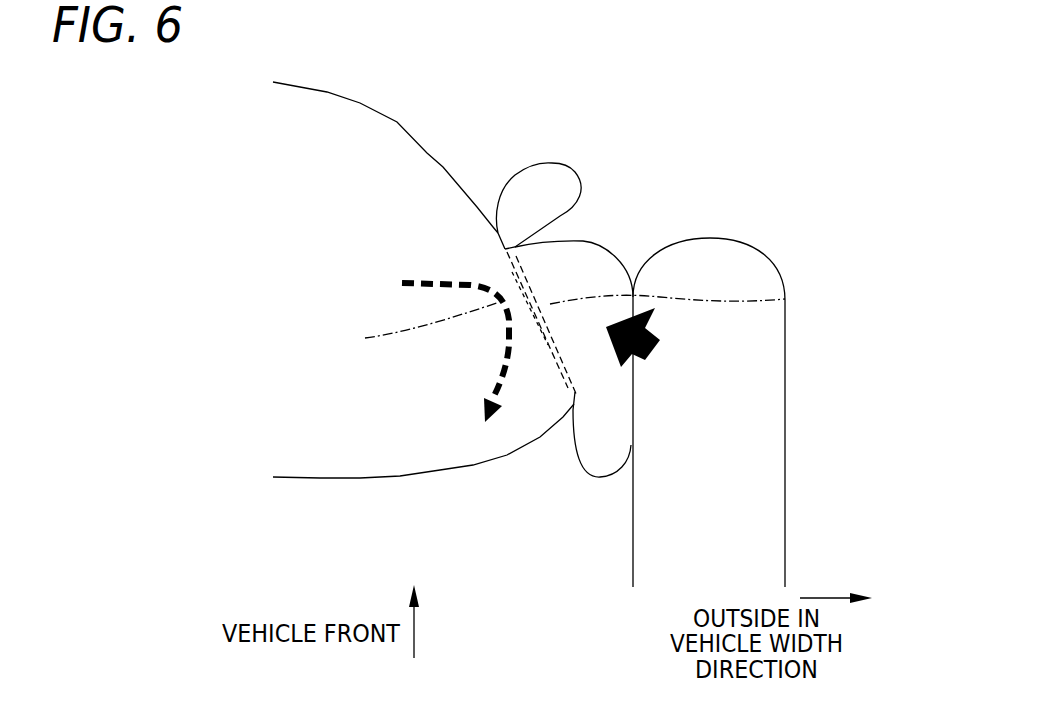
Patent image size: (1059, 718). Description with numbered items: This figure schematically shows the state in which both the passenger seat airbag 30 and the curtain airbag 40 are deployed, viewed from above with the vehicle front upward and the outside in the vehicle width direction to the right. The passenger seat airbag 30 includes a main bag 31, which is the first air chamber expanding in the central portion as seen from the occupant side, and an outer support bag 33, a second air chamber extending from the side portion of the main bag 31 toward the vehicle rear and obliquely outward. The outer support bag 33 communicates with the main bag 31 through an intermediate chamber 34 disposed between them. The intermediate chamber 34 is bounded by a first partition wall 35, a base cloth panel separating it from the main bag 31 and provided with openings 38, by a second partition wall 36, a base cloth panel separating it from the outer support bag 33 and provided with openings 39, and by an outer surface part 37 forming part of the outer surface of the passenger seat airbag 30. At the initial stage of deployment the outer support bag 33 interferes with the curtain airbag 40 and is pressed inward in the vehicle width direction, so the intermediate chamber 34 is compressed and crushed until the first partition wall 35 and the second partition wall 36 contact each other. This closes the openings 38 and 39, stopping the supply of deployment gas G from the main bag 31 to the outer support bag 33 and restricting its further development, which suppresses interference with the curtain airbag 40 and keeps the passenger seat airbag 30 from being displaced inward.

The passenger seat airbag 30 is at (324, 62).
The main bag 31 is at (395, 122).
The outer support bag 33 is at (593, 240).
The intermediate chamber 34 is at (538, 184).
The first partition wall 35 is at (503, 253).
The second partition wall 36 is at (573, 375).
The outer surface part 37 is at (560, 163).
The openings 38 is at (417, 329).
The openings 39 is at (785, 299).
The curtain airbag 40 is at (785, 470).
The deployment gas G is at (443, 347).